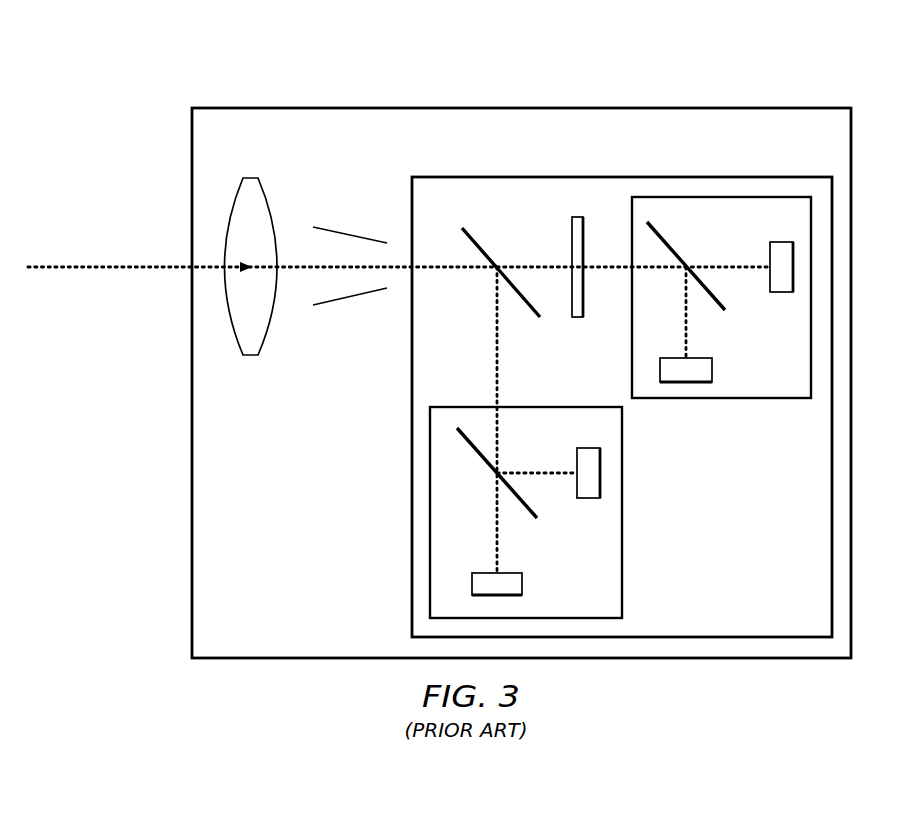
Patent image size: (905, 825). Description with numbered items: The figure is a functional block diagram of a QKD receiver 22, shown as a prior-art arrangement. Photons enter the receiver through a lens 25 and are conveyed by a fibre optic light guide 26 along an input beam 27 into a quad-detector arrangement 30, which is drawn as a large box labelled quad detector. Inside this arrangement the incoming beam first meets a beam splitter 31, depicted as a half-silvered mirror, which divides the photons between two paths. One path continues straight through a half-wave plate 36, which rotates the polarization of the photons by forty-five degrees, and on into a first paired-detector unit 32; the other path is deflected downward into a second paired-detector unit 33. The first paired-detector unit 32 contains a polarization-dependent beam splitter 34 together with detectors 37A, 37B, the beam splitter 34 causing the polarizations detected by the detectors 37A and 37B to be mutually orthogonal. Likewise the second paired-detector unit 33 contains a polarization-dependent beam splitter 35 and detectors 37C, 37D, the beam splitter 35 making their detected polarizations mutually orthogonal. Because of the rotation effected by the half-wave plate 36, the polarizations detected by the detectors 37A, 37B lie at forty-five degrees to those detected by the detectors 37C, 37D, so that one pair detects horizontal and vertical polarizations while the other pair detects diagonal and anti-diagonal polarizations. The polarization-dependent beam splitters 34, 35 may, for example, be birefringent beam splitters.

The QKD receiver 22 is at (239, 64).
The lens 25 is at (251, 176).
The fibre optic light guide 26 is at (350, 300).
The input optical beam 27 is at (451, 270).
The quad-detector arrangement 30 is at (402, 525).
The beam splitter 31 is at (483, 246).
The first paired-detector unit 32 is at (721, 410).
The second paired-detector unit 33 is at (632, 516).
The polarization-dependent beam splitter 34 is at (670, 242).
The polarization-dependent beam splitter 35 is at (474, 452).
The half-wave plate 36 is at (578, 319).
The detector 37A is at (783, 294).
The detector 37B is at (712, 369).
The detector 37C is at (588, 500).
The detector 37D is at (522, 585).